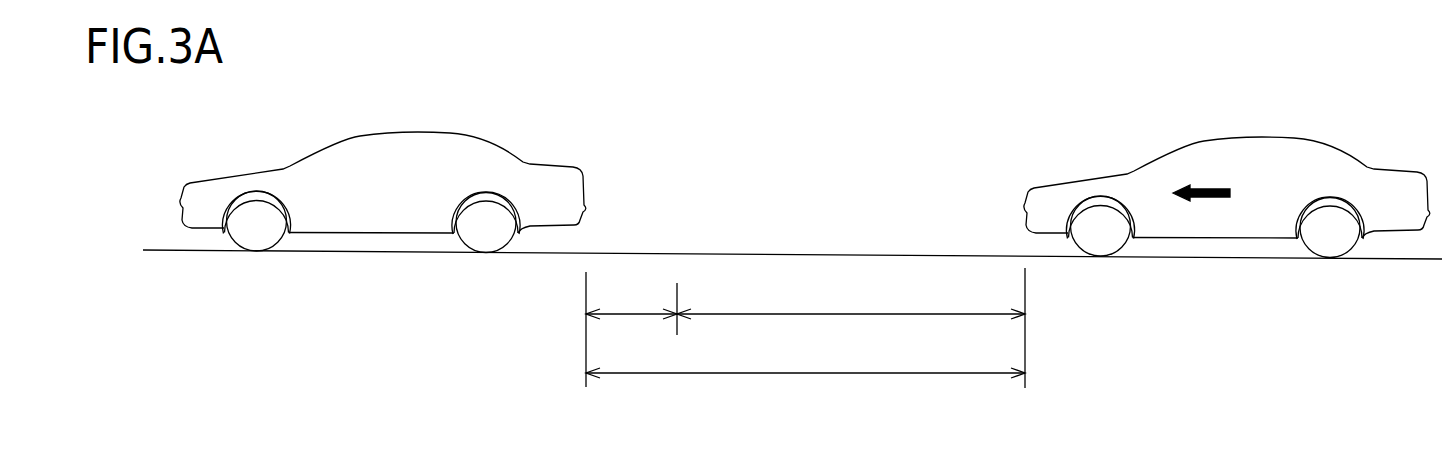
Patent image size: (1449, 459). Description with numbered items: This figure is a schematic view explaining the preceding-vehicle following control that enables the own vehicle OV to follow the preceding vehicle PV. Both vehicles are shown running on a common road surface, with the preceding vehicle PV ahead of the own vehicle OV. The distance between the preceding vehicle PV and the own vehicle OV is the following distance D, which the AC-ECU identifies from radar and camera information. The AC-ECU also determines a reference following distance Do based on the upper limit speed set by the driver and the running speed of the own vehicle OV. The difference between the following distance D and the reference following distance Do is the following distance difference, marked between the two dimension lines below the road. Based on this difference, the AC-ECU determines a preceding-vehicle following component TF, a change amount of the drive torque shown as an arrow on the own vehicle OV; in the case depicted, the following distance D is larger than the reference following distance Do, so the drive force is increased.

The preceding vehicle PV is at (422, 133).
The own vehicle OV is at (1255, 137).
The preceding-vehicle following component TF is at (1201, 206).
The following distance D is at (805, 328).
The reference following distance Do is at (851, 302).